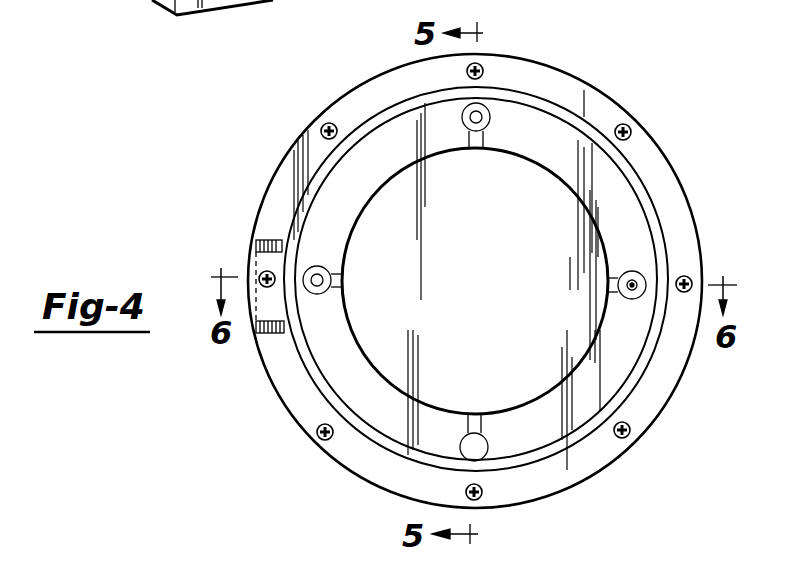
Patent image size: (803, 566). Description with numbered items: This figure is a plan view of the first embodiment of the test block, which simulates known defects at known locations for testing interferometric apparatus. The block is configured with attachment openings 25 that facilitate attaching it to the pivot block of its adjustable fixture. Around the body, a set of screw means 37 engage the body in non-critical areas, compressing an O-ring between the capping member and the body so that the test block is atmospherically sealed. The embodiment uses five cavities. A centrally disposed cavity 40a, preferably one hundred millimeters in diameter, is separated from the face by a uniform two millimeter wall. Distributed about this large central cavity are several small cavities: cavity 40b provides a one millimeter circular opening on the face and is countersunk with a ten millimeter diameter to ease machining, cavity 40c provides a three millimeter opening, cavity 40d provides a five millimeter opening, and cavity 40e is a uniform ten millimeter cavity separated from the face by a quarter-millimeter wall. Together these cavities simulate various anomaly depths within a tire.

The attachment openings 25 is at (255, 247).
The screw means 37 is at (482, 65).
The centrally disposed cavity 40a is at (523, 382).
The cavity 40b is at (632, 290).
The cavity 40c is at (462, 117).
The cavity 40d is at (320, 290).
The cavity 40e is at (477, 448).